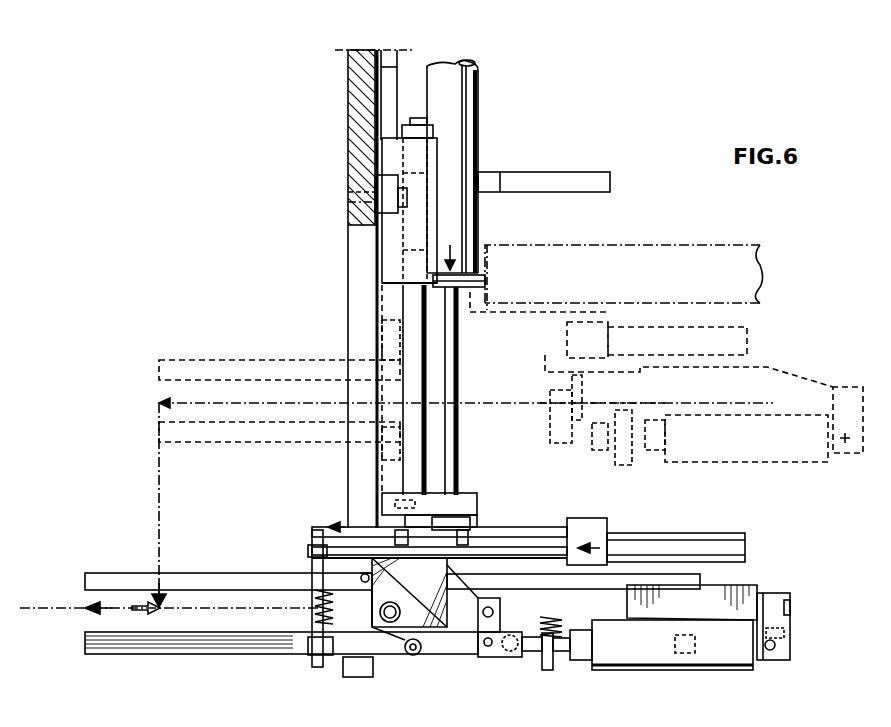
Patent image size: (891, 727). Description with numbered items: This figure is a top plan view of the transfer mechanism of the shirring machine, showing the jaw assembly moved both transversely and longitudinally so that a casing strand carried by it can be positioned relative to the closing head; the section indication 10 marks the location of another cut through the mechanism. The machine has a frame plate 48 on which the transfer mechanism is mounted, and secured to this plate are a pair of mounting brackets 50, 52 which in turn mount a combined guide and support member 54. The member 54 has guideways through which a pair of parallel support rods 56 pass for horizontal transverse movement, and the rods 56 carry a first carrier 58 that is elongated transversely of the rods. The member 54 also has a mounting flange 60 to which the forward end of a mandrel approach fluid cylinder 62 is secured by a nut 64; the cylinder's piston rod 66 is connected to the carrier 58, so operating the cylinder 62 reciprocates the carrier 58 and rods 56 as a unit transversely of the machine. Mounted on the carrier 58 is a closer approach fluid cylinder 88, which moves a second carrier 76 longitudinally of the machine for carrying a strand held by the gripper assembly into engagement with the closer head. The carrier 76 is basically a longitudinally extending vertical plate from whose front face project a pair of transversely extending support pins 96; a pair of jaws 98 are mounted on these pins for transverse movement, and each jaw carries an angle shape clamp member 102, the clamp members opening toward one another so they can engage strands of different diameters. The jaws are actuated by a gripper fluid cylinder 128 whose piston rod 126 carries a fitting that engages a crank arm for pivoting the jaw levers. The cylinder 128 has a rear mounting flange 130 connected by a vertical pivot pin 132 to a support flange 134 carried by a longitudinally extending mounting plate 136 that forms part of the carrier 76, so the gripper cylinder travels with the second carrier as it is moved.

The section indicator 10 is at (487, 98).
The frame plate 48 is at (356, 330).
The mounting bracket 50 is at (360, 176).
The mounting bracket 52 is at (366, 60).
The combined guide and support member 54 is at (392, 247).
The support rods 56 is at (412, 295).
The first carrier 58 is at (480, 500).
The mounting flange 60 is at (490, 248).
The mandrel approach fluid cylinder 62 is at (480, 147).
The nut 64 is at (492, 289).
The piston rod 66 is at (460, 380).
The second carrier 76 is at (405, 555).
The closer approach fluid cylinder 88 is at (752, 342).
The support pins or rods 96 is at (312, 640).
The jaws 98 is at (305, 564).
The angle shape clamp member 102 is at (258, 358).
The piston rod 126 is at (572, 645).
The gripper fluid cylinder 128 is at (778, 462).
The rear mounting flange 130 is at (782, 620).
The vertical pivot pin 132 is at (785, 645).
The support flange 134 is at (790, 606).
The mounting plate 136 is at (775, 600).